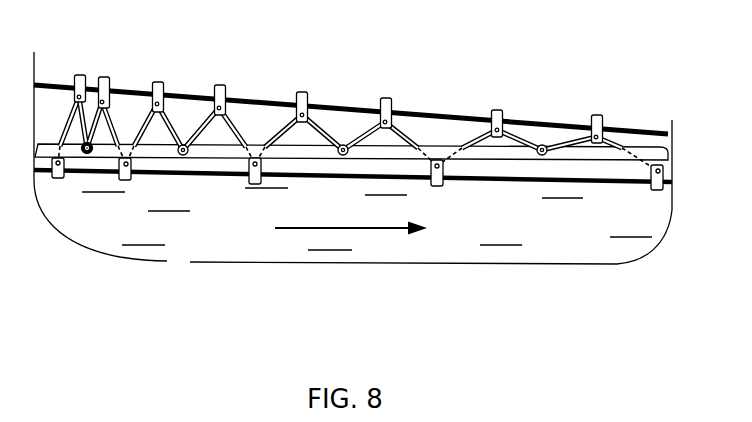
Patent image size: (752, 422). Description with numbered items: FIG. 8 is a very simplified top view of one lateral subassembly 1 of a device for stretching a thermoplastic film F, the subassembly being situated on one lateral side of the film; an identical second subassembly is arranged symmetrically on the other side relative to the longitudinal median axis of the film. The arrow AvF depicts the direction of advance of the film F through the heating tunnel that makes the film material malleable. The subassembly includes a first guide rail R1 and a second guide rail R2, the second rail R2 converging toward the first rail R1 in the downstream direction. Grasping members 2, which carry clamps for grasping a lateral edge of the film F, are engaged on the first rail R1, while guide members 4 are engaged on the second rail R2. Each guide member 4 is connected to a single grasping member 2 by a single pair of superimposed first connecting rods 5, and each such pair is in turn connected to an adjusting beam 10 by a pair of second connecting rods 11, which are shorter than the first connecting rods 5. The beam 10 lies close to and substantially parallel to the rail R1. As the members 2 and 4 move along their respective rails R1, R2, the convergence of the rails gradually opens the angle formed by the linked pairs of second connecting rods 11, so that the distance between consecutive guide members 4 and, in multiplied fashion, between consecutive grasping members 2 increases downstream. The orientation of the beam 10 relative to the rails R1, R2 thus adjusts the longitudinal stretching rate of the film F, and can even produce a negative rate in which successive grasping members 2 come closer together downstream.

The lateral subassembly 1 is at (374, 167).
The grasping member 2 is at (247, 182).
The guide member 4 is at (157, 84).
The first connecting rods 5 is at (138, 128).
The adjusting beam 10 is at (376, 146).
The second connecting rods 11 is at (199, 128).
The first guide rail R1 is at (617, 181).
The second guide rail R2 is at (640, 128).
The thermoplastic film F is at (580, 238).
The direction of advance of the film AvF is at (288, 230).